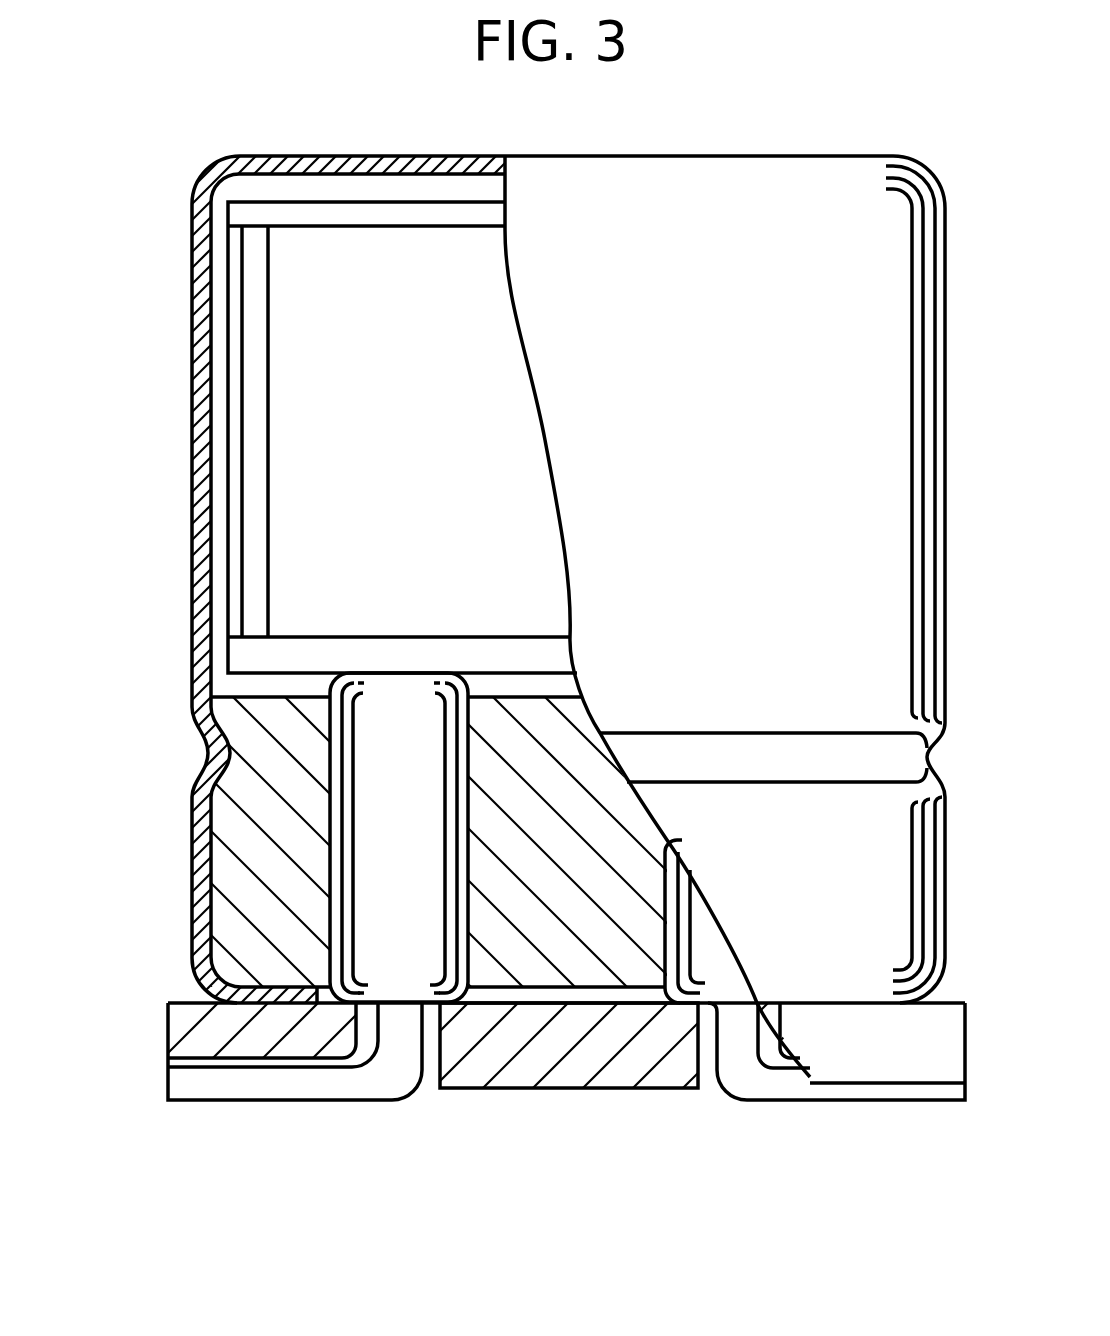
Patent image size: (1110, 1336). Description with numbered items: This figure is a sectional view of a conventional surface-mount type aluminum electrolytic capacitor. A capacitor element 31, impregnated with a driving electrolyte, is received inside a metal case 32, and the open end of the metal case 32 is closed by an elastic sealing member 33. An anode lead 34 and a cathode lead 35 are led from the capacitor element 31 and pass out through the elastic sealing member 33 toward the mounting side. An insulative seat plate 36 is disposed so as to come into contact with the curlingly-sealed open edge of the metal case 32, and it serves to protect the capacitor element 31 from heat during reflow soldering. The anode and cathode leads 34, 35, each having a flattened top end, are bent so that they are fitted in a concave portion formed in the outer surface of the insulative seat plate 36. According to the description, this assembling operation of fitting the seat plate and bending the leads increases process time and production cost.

The capacitor element 31 is at (287, 272).
The metal case 32 is at (197, 521).
The elastic sealing member 33 is at (237, 876).
The anode lead 34 is at (343, 1083).
The cathode lead 35 is at (770, 1085).
The insulative seat plate 36 is at (558, 1077).